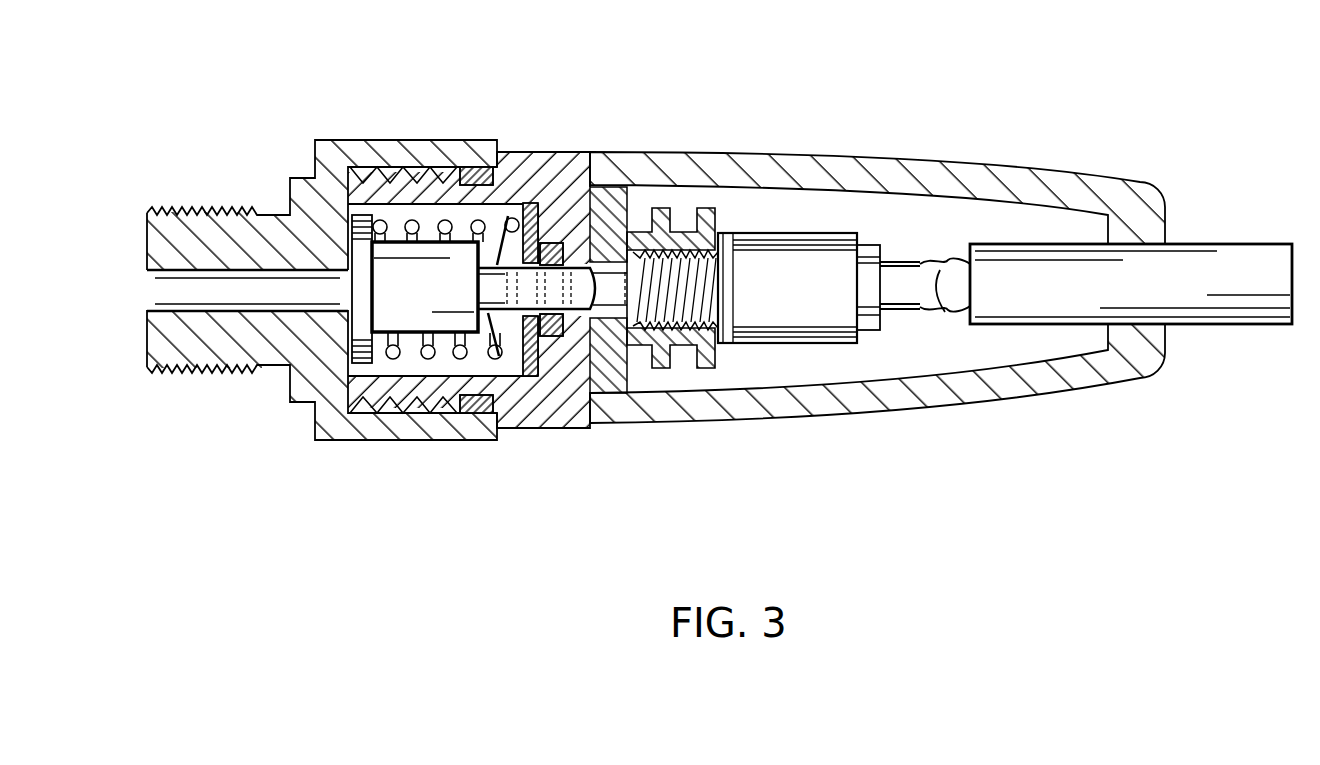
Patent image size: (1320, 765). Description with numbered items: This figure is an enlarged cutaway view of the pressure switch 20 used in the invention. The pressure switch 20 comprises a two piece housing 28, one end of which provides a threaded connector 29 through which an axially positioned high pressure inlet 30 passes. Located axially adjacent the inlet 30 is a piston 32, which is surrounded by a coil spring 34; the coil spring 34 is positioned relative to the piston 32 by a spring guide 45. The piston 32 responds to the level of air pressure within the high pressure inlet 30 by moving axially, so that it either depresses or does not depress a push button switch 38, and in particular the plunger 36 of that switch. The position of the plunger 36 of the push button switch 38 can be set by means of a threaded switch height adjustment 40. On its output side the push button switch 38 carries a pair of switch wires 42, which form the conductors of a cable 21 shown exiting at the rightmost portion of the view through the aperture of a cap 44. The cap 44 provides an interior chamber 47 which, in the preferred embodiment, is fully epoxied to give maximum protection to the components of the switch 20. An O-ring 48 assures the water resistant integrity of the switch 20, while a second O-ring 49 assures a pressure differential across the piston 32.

The pressure switch 20 is at (780, 125).
The cable 21 is at (1260, 277).
The two piece housing 28 is at (300, 180).
The threaded connector 29 is at (170, 210).
The high pressure inlet 30 is at (158, 293).
The piston 32 is at (489, 289).
The coil spring 34 is at (412, 222).
The plunger 36 is at (588, 262).
The push button switch 38 is at (752, 313).
The threaded switch height adjustment 40 is at (686, 232).
The switch wires 42 is at (948, 268).
The cap 44 is at (867, 155).
The spring guide 45 is at (536, 200).
The interior chamber 47 is at (912, 355).
The O-ring 48 is at (480, 415).
The O-ring 49 is at (624, 344).